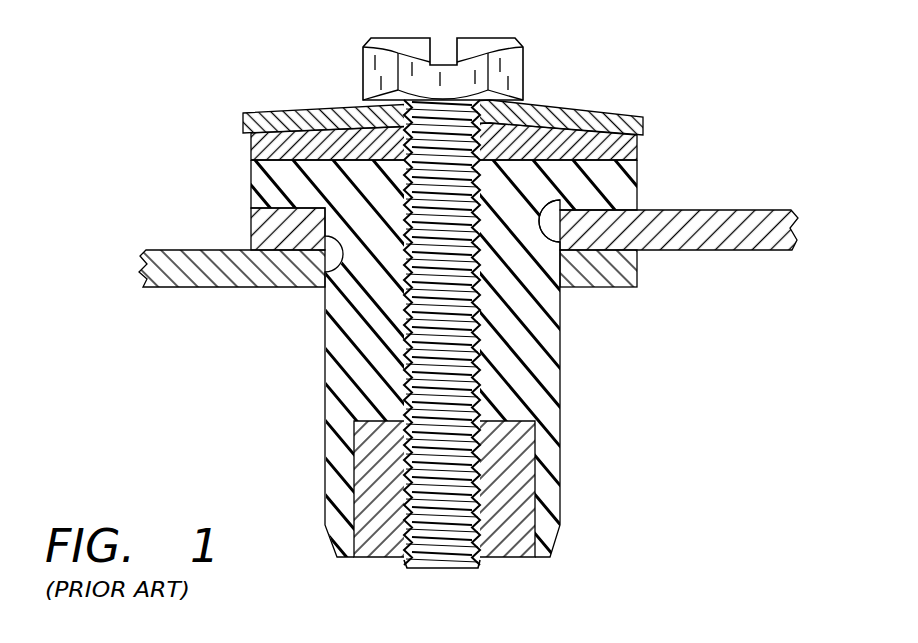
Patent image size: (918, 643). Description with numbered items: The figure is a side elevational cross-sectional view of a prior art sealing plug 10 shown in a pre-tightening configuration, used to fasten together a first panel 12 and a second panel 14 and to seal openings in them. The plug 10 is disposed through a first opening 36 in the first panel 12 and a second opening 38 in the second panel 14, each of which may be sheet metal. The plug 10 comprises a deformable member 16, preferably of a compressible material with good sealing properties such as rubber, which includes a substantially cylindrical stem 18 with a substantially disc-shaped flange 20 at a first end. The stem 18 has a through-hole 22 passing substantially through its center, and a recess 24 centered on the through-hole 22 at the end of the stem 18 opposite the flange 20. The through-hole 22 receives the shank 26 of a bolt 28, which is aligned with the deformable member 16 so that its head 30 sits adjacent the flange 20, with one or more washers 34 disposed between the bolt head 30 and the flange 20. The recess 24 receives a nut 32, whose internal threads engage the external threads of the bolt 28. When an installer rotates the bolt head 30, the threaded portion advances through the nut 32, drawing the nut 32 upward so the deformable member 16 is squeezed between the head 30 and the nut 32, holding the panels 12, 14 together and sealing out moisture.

The sealing plug 10 is at (716, 126).
The first panel 12 is at (730, 236).
The second panel 14 is at (155, 258).
The deformable member 16 is at (459, 350).
The stem 18 is at (355, 393).
The flange 20 is at (252, 162).
The through-hole 22 is at (434, 350).
The recess 24 is at (500, 557).
The shank 26 is at (403, 318).
The bolt 28 is at (500, 130).
The head 30 is at (370, 62).
The nut 32 is at (373, 468).
The washers 34 is at (250, 143).
The first opening 36 is at (540, 217).
The second opening 38 is at (328, 237).